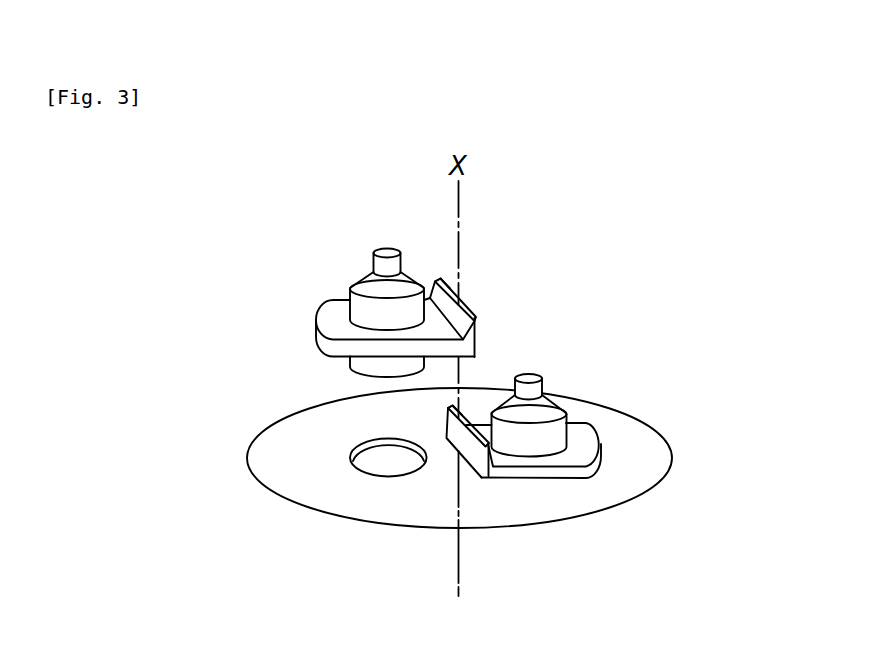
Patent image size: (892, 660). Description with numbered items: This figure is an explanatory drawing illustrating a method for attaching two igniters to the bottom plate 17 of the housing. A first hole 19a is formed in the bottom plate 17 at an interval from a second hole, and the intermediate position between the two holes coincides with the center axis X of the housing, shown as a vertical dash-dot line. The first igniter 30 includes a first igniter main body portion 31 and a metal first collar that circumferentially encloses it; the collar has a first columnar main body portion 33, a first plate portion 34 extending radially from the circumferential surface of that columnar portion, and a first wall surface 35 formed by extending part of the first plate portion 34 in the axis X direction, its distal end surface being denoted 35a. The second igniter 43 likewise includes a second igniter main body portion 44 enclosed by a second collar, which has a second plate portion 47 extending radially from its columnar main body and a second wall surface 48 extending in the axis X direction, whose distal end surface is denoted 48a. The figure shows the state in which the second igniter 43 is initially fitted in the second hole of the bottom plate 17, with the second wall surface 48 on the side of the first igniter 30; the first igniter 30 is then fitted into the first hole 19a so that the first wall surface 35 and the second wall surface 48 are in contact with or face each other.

The bottom plate 17 is at (496, 476).
The first hole 19a is at (373, 460).
The first igniter 30 is at (397, 291).
The first igniter main body portion 31 is at (389, 252).
The first columnar main body portion 33 is at (382, 370).
The first plate portion 34 is at (337, 326).
The first wall surface 35 is at (493, 286).
The distal end surface of the first wall surface 35a is at (443, 281).
The second igniter 43 is at (511, 439).
The second igniter main body portion 44 is at (530, 377).
The second plate portion 47 is at (550, 459).
The second wall surface 48 is at (433, 485).
The distal end surface of the second wall surface 48a is at (447, 413).